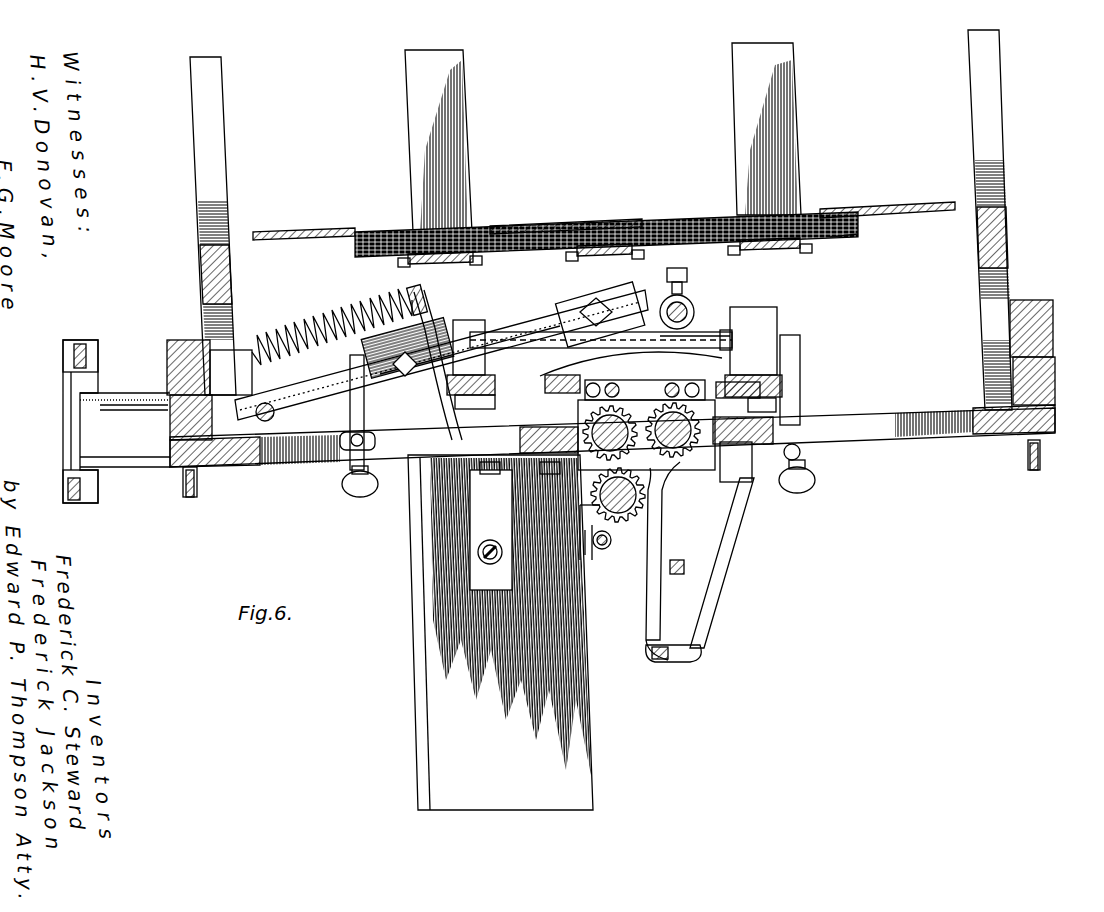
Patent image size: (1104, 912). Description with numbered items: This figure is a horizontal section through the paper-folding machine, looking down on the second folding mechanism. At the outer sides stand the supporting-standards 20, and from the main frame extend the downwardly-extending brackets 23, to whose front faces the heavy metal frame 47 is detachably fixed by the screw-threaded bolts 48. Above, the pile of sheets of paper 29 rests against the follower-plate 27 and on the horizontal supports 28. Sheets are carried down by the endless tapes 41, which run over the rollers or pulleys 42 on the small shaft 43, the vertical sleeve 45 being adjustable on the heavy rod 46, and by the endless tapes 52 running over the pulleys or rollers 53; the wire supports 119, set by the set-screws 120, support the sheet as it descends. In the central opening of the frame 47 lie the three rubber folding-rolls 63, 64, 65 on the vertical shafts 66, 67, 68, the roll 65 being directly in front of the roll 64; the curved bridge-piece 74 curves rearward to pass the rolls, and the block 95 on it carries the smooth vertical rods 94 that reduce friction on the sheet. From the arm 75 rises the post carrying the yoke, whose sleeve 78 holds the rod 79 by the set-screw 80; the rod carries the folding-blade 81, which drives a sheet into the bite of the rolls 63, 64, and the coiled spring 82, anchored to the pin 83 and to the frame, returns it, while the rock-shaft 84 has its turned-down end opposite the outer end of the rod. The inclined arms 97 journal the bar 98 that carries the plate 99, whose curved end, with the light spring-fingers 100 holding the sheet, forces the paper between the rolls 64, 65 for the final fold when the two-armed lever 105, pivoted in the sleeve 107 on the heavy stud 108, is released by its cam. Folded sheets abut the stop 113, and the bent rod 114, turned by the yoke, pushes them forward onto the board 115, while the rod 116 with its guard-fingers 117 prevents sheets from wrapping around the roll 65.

The supporting-standards 20 is at (218, 140).
The downwardly-extending brackets 23 is at (190, 340).
The follower-plate 27 is at (604, 214).
The horizontal supports 28 is at (456, 138).
The pile of sheets of paper 29 is at (850, 236).
The endless tapes 41 is at (466, 325).
The rollers or pulleys 42 is at (782, 312).
The small shaft 43 is at (540, 340).
The vertical sleeve 45 is at (688, 290).
The heavy rod 46 is at (668, 300).
The heavy metal frame 47 is at (180, 430).
The screw-threaded bolts 48 is at (186, 492).
The endless tapes 52 is at (778, 405).
The pulleys or rollers 53 is at (778, 390).
The folding-roll 63 is at (680, 468).
The folding-roll 64 is at (582, 422).
The folding-roll 65 is at (622, 522).
The vertical shaft 66 is at (690, 450).
The vertical shaft 67 is at (631, 376).
The vertical shaft 68 is at (608, 548).
The curved bridge-piece 74 is at (730, 334).
The arm 75 is at (430, 398).
The sleeve 78 is at (437, 322).
The rod 79 is at (507, 335).
The set-screw 80 is at (355, 360).
The folding-blade 81 is at (601, 358).
The coiled spring 82 is at (282, 345).
The pin 83 is at (410, 298).
The rock-shaft 84 is at (242, 397).
The vertical rods 94 is at (593, 388).
The block 95 is at (614, 373).
The arms 97 is at (742, 548).
The bar 98 is at (700, 652).
The plate 99 is at (662, 542).
The spring-fingers 100 is at (650, 612).
The two-armed lever or yoke 105 is at (68, 490).
The sleeve 107 is at (73, 428).
The heavy stud 108 is at (160, 458).
The stop 113 is at (408, 568).
The bent rod 114 is at (472, 480).
The board 115 is at (575, 745).
The rod 116 is at (597, 575).
The guard-fingers 117 is at (590, 548).
The supports 119 is at (350, 395).
The set-screws 120 is at (342, 486).